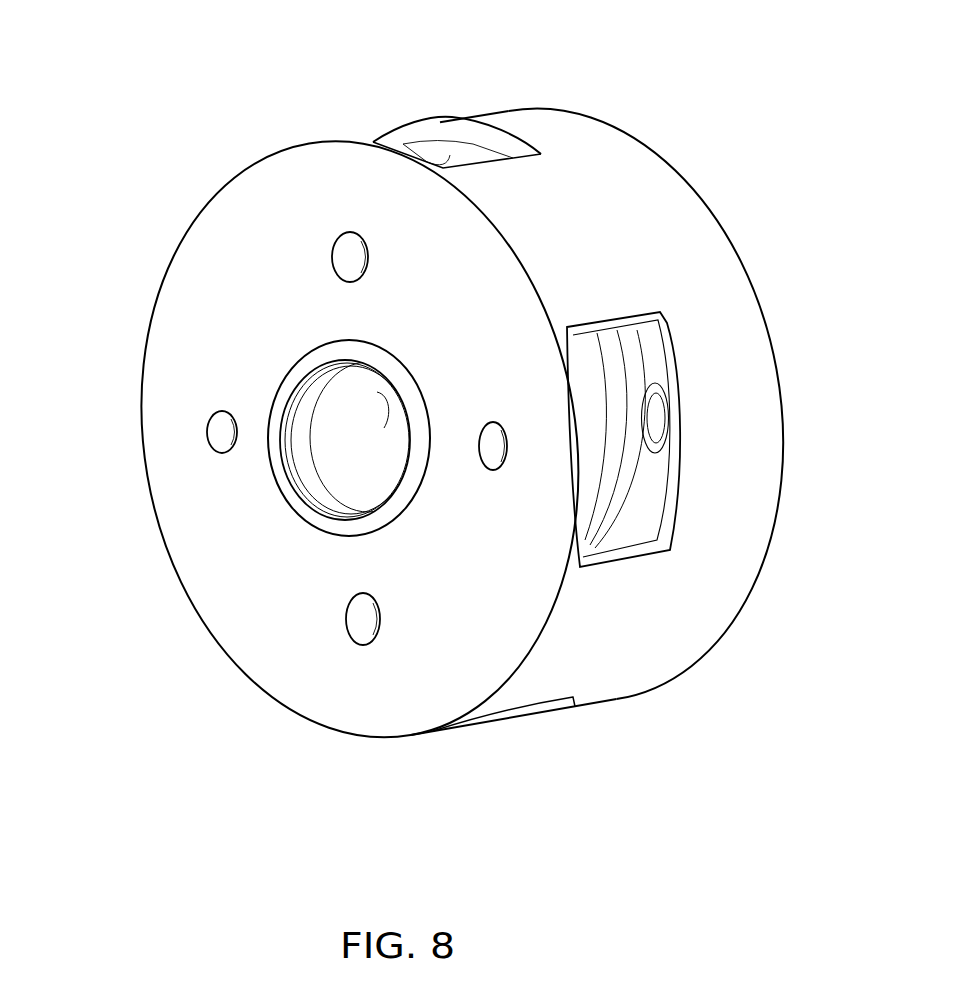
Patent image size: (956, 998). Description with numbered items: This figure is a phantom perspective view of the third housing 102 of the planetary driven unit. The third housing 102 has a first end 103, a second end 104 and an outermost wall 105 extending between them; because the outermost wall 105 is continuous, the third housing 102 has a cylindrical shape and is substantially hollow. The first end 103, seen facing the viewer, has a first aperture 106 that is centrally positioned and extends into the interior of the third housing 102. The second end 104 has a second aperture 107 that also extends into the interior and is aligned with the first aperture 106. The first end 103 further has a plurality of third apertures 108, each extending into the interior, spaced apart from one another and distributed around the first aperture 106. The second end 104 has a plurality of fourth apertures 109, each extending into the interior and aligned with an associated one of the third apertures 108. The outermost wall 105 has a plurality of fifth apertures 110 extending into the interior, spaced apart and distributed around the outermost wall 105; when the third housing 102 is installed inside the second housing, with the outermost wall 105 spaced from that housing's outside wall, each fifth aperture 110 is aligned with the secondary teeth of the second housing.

The third housing 102 is at (523, 110).
The first end 103 is at (177, 463).
The second end 104 is at (753, 290).
The outermost wall 105 is at (645, 170).
The first aperture 106 is at (328, 468).
The second aperture 107 is at (598, 375).
The third apertures 108 is at (342, 256).
The fourth apertures 109 is at (663, 417).
The fifth apertures 110 is at (424, 128).